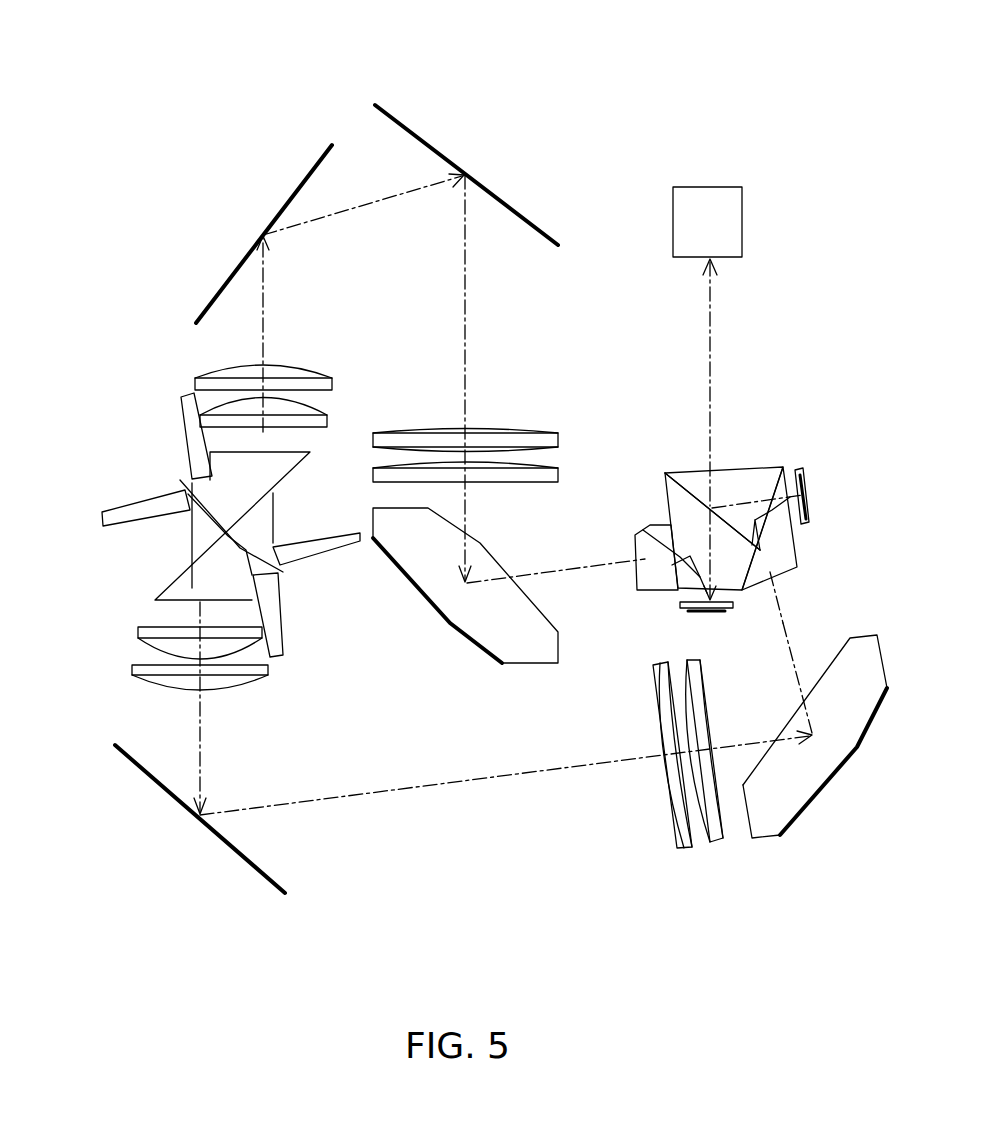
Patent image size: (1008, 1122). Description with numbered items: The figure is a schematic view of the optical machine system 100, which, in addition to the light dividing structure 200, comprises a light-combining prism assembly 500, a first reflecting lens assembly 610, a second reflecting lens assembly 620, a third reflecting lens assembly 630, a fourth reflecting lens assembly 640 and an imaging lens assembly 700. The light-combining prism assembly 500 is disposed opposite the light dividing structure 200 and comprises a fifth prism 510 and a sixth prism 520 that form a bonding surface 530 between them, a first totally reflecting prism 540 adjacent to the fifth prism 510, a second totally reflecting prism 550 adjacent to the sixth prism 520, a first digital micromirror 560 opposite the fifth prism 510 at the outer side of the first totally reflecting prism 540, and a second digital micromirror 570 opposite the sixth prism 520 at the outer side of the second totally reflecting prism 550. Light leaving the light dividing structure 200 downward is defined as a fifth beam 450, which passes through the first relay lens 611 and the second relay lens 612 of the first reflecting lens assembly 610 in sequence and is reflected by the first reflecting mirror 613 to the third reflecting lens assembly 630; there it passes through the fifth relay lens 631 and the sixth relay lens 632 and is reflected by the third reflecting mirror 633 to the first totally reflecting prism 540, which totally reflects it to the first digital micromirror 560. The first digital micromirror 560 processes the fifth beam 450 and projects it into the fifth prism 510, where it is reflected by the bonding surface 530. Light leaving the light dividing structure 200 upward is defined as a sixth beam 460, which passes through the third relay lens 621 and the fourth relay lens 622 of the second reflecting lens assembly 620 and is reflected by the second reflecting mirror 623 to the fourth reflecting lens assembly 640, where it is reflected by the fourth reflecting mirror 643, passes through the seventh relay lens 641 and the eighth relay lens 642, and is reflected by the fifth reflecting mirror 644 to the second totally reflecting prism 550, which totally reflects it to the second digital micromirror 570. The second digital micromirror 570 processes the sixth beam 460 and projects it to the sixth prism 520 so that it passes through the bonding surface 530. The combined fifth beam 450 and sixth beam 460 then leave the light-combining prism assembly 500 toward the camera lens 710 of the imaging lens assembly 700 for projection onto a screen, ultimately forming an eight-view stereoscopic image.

The optical machine system 100 is at (229, 29).
The light dividing structure 200 is at (184, 445).
The fifth beam 450 is at (445, 785).
The sixth beam 460 is at (345, 208).
The light-combining prism assembly 500 is at (728, 443).
The fifth prism 510 is at (733, 483).
The sixth prism 520 is at (678, 503).
The bonding surface 530 is at (692, 488).
The first totally reflecting prism 540 is at (782, 548).
The second totally reflecting prism 550 is at (648, 582).
The first digital micromirror 560 is at (807, 480).
The second digital micromirror 570 is at (718, 610).
The first reflecting lens assembly 610 is at (78, 618).
The first relay lens 611 is at (148, 632).
The second relay lens 612 is at (138, 668).
The first reflecting mirror 613 is at (130, 753).
The second reflecting lens assembly 620 is at (132, 132).
The third relay lens 621 is at (225, 410).
The fourth relay lens 622 is at (223, 373).
The second reflecting mirror 623 is at (297, 188).
The third reflecting lens assembly 630 is at (790, 913).
The fifth relay lens 631 is at (683, 840).
The sixth relay lens 632 is at (718, 837).
The third reflecting mirror 633 is at (768, 820).
The fourth reflecting lens assembly 640 is at (692, 45).
The seventh relay lens 641 is at (533, 437).
The eighth relay lens 642 is at (552, 475).
The fourth reflecting mirror 643 is at (438, 150).
The fifth reflecting mirror 644 is at (533, 610).
The imaging lens assembly 700 is at (755, 197).
The camera lens 710 is at (728, 228).